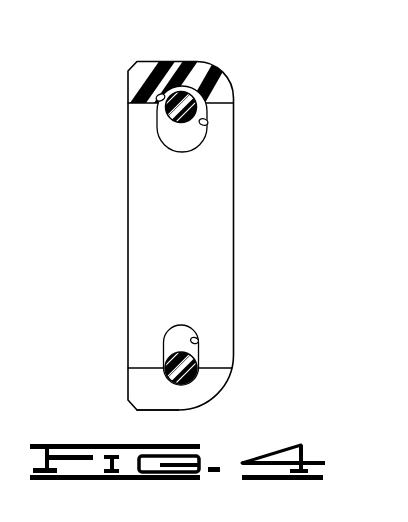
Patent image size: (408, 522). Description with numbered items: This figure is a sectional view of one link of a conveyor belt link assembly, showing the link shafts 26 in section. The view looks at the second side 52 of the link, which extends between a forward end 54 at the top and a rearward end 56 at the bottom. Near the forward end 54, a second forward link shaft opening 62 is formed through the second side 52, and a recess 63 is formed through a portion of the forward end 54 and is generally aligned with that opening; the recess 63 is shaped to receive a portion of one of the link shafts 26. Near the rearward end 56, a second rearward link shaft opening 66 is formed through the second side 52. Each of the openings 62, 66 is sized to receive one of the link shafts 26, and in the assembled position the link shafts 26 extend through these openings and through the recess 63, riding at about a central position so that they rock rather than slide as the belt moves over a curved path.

The link shaft 26 is at (188, 98).
The second side 52 is at (209, 228).
The forward end 54 is at (159, 57).
The rearward end 56 is at (167, 413).
The second forward link shaft opening 62 is at (207, 123).
The recess 63 is at (140, 89).
The second rearward link shaft opening 66 is at (199, 341).